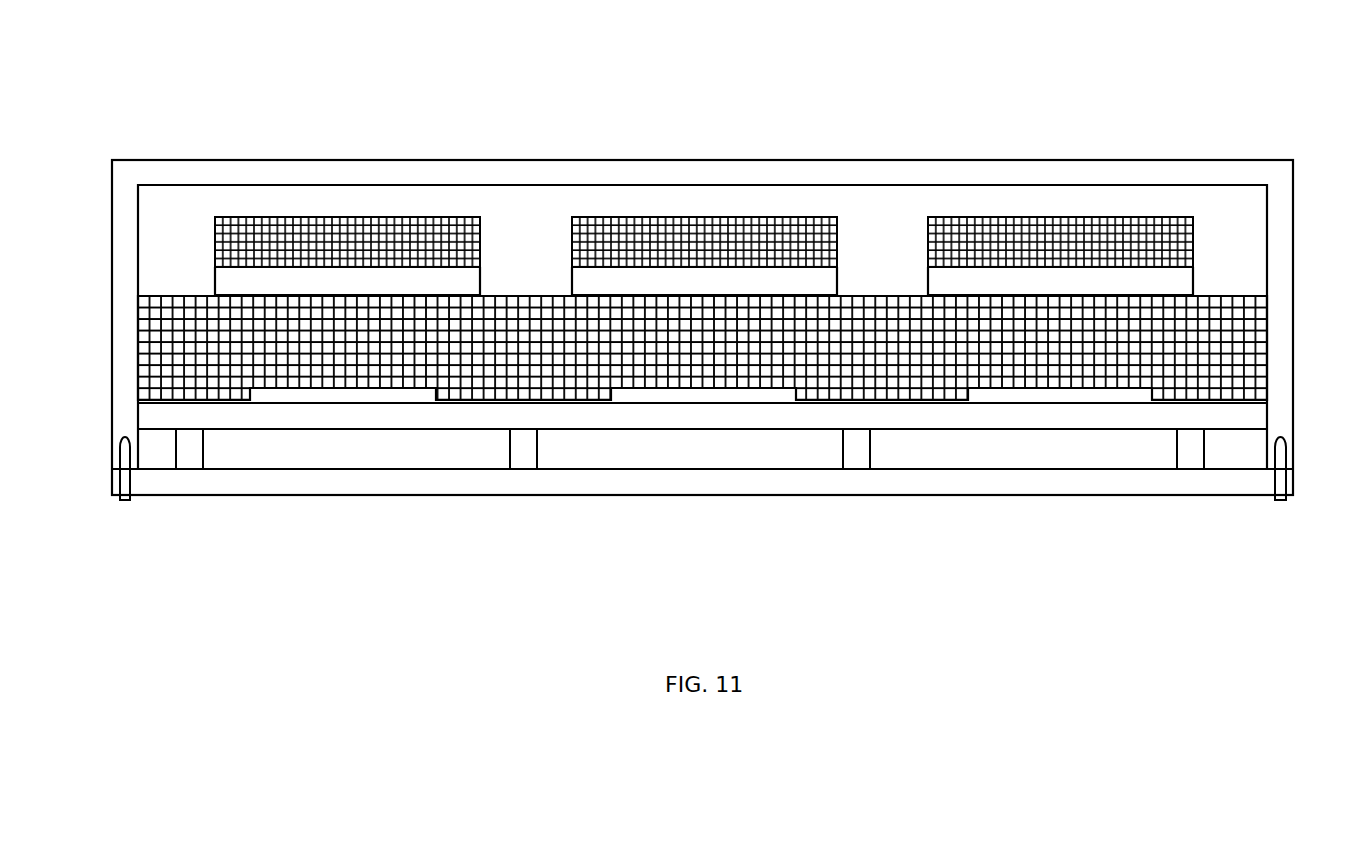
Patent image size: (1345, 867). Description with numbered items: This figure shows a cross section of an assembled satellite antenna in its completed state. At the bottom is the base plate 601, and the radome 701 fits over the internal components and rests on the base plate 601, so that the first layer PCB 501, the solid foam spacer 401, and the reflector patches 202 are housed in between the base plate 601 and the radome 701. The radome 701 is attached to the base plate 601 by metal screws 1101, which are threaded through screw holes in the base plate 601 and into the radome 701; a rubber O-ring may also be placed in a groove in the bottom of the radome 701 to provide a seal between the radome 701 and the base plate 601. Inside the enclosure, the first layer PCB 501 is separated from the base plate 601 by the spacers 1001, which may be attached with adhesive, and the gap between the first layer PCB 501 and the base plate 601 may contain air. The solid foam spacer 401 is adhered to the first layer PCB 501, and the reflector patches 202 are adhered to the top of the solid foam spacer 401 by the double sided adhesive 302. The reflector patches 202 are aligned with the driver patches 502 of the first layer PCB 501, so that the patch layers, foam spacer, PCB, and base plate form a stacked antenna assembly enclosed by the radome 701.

The radome 701 is at (515, 160).
The reflector patches 202 is at (745, 218).
The double sided adhesive 302 is at (838, 277).
The solid foam spacer 401 is at (138, 370).
The driver patches 502 is at (299, 403).
The first layer PCB 501 is at (385, 430).
The spacers 1001 is at (870, 455).
The base plate 601 is at (773, 495).
The metal screws 1101 is at (1279, 500).